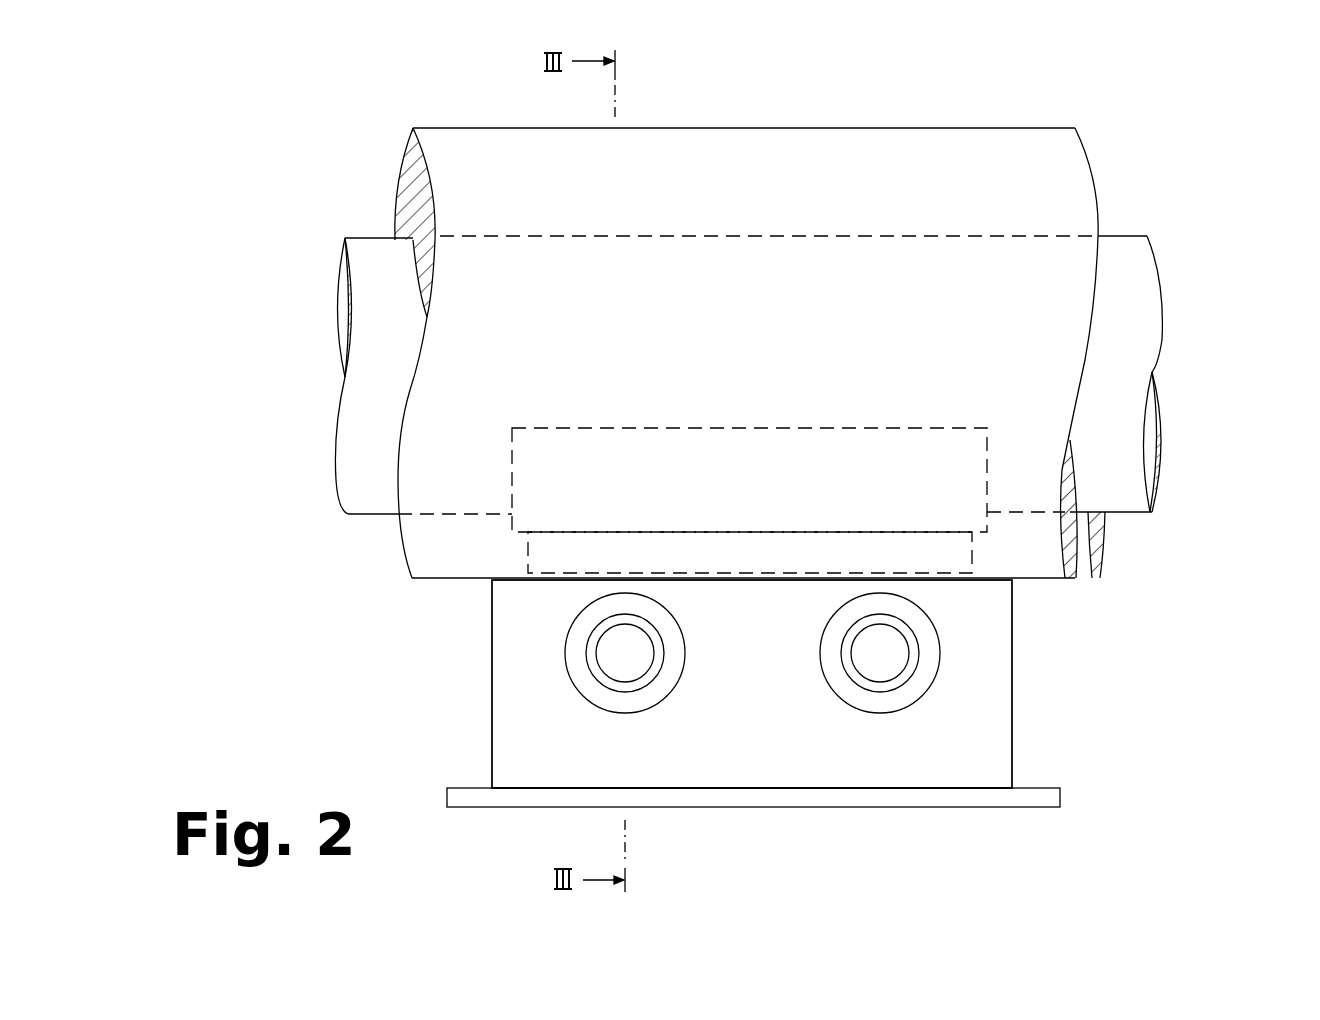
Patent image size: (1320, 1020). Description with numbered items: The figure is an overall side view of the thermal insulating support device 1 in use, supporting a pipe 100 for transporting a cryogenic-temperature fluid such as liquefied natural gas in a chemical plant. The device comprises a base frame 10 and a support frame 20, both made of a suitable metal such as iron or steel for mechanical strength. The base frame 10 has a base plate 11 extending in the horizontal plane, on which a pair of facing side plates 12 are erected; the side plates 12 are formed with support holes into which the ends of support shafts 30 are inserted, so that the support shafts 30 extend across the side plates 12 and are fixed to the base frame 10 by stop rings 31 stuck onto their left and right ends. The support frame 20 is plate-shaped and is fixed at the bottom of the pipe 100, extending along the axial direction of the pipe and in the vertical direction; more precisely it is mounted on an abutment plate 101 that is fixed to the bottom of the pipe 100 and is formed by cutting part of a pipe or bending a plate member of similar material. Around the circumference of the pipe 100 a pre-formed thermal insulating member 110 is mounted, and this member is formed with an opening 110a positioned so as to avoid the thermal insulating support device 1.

The thermal insulating support device 1 is at (447, 650).
The base frame 10 is at (1028, 685).
The base plate 11 is at (477, 803).
The side plate 12 is at (770, 724).
The support frame 20 is at (513, 553).
The support shaft 30 is at (608, 668).
The stop ring 31 is at (573, 655).
The pipe 100 is at (1168, 370).
The abutment plate 101 is at (535, 470).
The thermal insulating member 110 is at (935, 138).
The opening 110a is at (1083, 552).